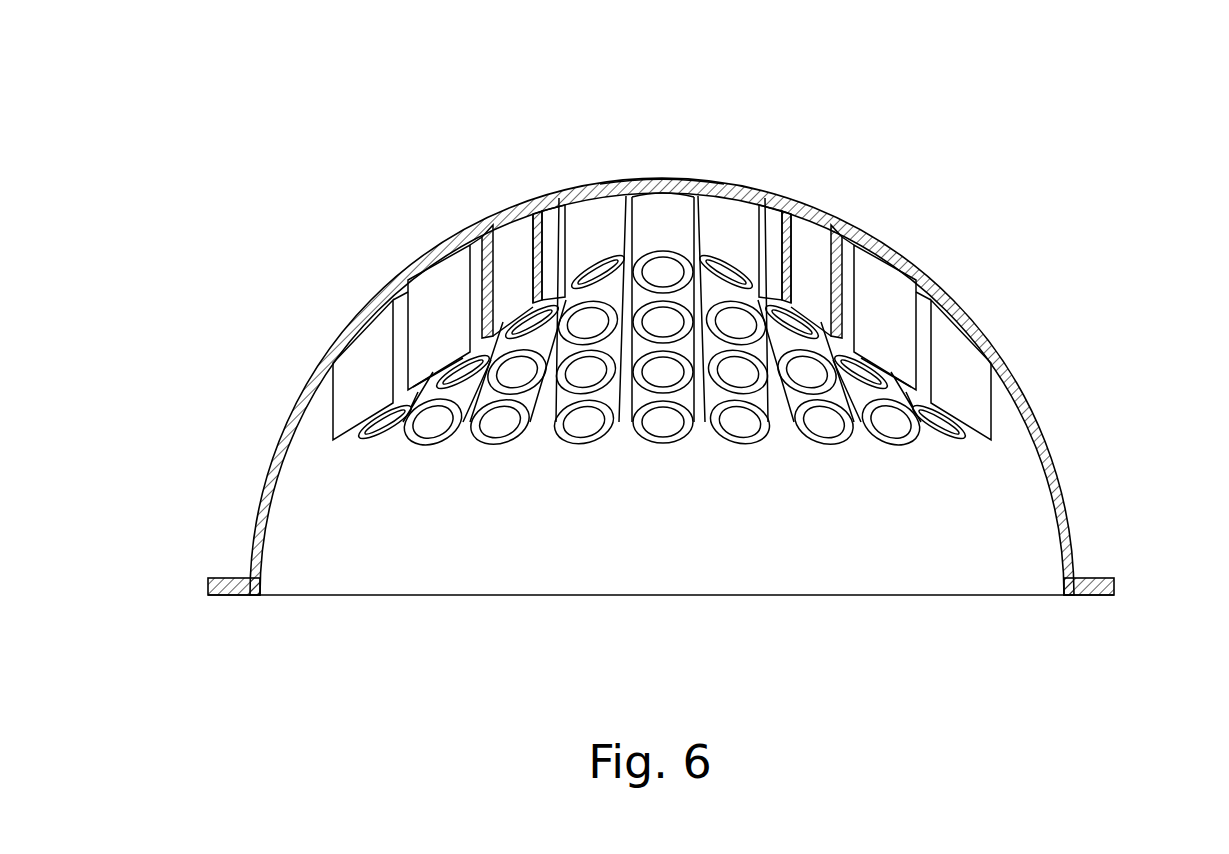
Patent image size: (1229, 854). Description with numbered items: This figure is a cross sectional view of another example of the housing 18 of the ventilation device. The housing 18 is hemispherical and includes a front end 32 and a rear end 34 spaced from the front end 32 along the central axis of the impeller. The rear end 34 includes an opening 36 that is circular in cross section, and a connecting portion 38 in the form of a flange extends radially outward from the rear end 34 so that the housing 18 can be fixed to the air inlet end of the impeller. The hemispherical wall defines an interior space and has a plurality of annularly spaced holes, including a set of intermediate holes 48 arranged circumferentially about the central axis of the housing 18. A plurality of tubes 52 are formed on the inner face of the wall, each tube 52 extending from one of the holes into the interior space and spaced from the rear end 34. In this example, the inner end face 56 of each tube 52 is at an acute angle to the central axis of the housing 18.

The housing 18 is at (1064, 508).
The front end 32 is at (652, 182).
The rear end 34 is at (250, 577).
The opening 36 is at (549, 598).
The connecting portion 38 is at (1100, 598).
The intermediate holes 48 is at (813, 227).
The tubes 52 is at (357, 347).
The inner end face 56 is at (355, 432).